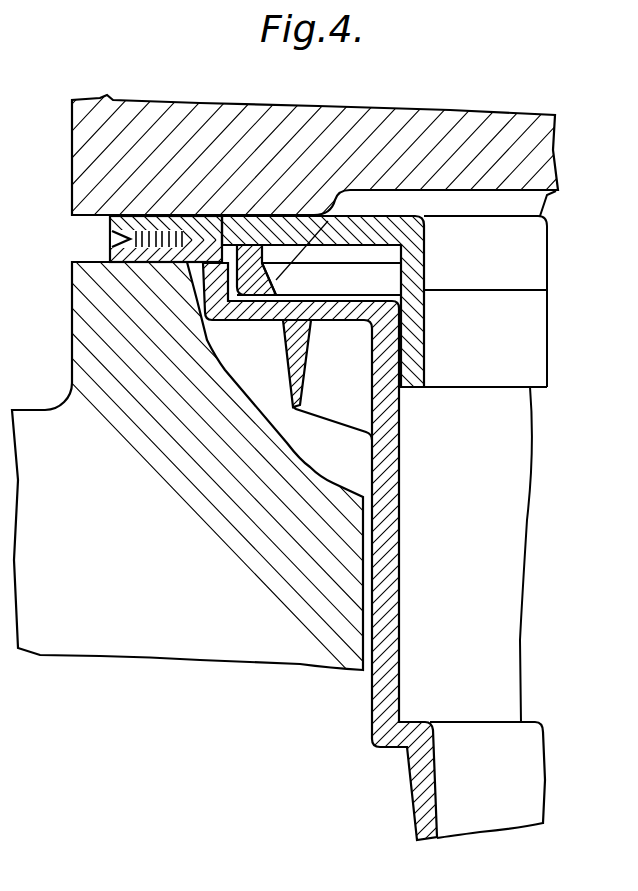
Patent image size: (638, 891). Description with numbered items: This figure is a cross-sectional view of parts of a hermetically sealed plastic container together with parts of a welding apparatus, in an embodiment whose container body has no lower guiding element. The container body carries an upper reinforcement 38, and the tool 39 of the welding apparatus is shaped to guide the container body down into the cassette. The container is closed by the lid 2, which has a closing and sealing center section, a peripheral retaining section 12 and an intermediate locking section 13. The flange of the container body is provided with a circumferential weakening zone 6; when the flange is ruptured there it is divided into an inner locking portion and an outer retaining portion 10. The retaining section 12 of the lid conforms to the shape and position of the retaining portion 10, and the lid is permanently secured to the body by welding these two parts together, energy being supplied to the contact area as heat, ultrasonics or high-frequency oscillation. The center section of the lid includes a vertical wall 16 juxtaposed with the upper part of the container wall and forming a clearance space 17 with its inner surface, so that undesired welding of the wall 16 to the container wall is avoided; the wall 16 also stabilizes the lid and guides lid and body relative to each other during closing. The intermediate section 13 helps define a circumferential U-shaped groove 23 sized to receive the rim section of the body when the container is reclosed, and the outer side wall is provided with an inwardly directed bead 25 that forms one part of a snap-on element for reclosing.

The lid 2 is at (425, 244).
The weakening zone 6 is at (247, 321).
The retaining portion 10 is at (110, 244).
The retaining section 12 is at (110, 222).
The intermediate locking section 13 is at (378, 217).
The vertical wall 16 is at (426, 355).
The clearance space 17 is at (412, 324).
The U-shaped groove 23 is at (380, 257).
The inwardly directed bead 25 is at (335, 225).
The upper reinforcement 38 is at (298, 352).
The tool 39 is at (283, 471).